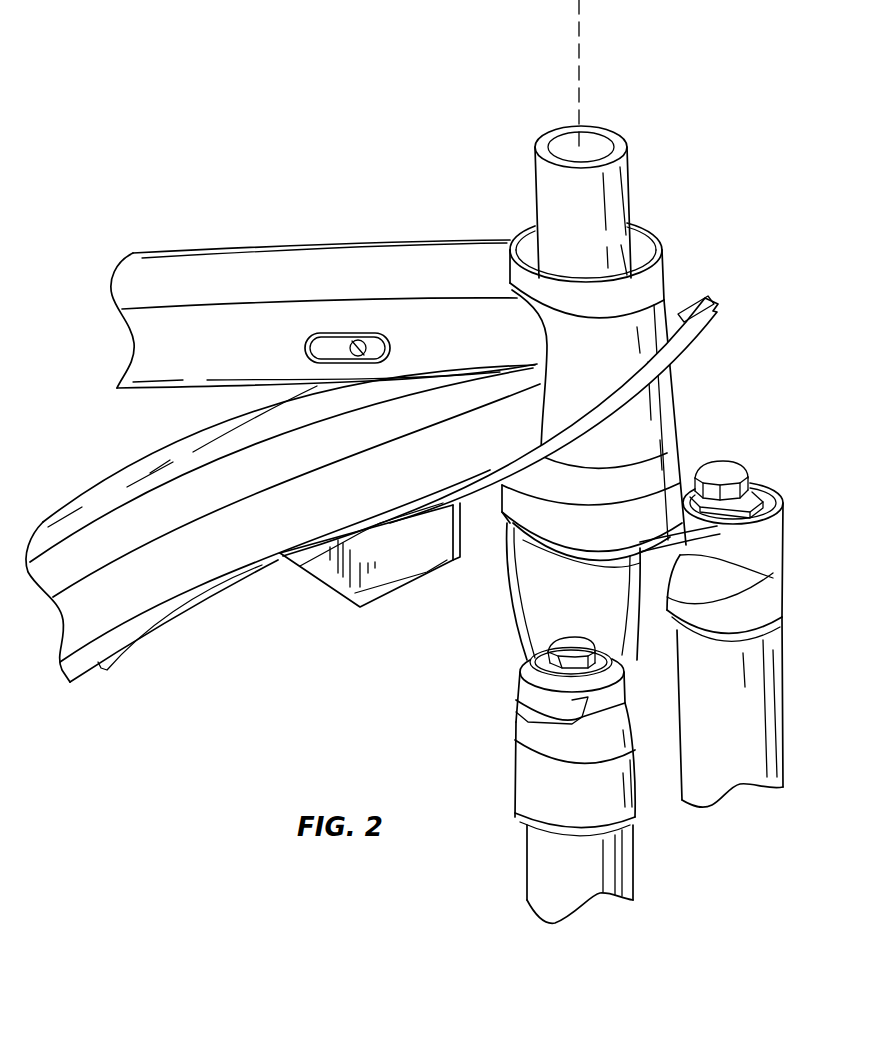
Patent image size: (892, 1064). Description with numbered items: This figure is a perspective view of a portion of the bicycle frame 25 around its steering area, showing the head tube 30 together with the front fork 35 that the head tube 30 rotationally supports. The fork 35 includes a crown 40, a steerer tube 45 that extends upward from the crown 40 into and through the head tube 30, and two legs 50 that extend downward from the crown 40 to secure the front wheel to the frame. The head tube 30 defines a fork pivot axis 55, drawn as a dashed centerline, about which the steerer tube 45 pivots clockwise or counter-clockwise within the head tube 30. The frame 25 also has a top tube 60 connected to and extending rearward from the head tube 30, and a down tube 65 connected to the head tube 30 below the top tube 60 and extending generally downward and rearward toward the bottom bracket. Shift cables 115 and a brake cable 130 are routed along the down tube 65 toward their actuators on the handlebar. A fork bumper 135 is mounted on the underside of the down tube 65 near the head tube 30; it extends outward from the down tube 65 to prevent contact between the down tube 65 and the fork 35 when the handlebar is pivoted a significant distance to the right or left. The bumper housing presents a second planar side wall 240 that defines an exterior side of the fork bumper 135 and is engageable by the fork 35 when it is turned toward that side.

The frame 25 is at (230, 247).
The top tube 60 is at (435, 252).
The down tube 65 is at (135, 477).
The fork bumper 135 is at (332, 595).
The second planar side surface or wall 240 is at (394, 563).
The steerer tube 45 is at (616, 177).
The fork pivot axis 55 is at (580, 47).
The head tube 30 is at (660, 415).
The brake cable 130 is at (692, 316).
The shift cable 115 is at (695, 352).
The front fork 35 is at (750, 480).
The crown 40 is at (545, 618).
The legs 50 is at (614, 836).